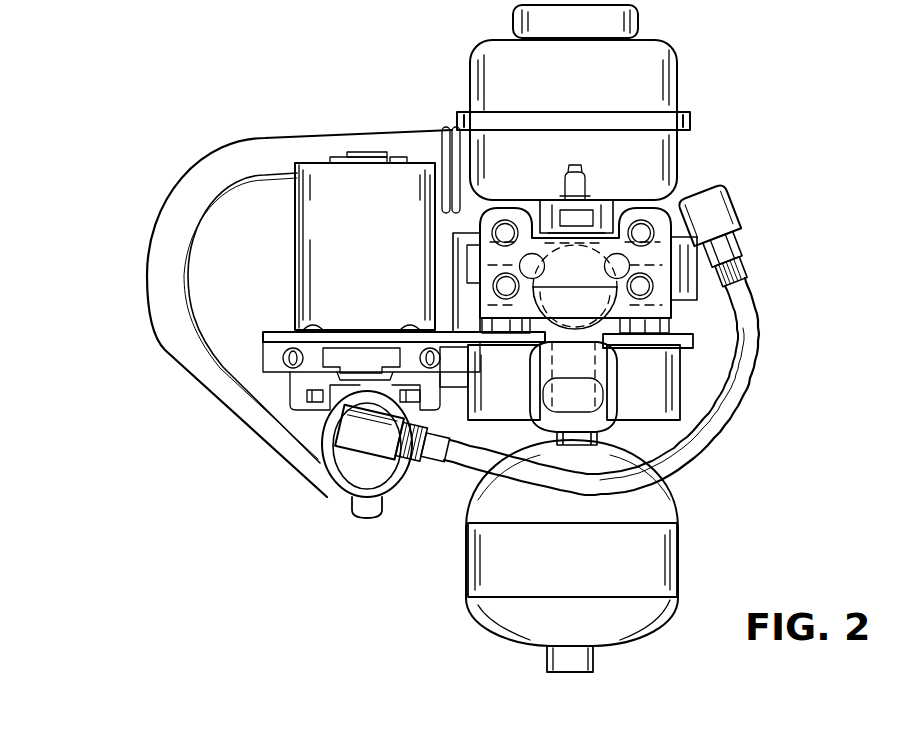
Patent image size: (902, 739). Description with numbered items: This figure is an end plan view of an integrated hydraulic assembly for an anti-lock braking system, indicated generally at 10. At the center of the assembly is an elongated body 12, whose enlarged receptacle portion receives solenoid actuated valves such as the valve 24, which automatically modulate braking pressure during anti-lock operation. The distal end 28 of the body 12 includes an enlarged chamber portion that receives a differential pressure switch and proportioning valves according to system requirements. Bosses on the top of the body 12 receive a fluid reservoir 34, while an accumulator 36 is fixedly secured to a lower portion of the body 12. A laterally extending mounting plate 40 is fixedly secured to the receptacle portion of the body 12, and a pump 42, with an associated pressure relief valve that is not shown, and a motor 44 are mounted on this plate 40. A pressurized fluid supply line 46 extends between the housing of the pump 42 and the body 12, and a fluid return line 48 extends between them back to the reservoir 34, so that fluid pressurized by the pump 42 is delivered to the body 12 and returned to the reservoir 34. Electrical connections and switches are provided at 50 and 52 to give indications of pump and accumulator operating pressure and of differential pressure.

The integrated hydraulic assembly 10 is at (833, 214).
The elongated body 12 is at (683, 322).
The solenoid actuated valve 24 is at (658, 382).
The distal end 28 is at (680, 308).
The fluid reservoir 34 is at (650, 76).
The accumulator 36 is at (672, 526).
The mounting plate 40 is at (267, 337).
The pump 42 is at (337, 480).
The motor 44 is at (313, 230).
The pressurized fluid supply line 46 is at (465, 460).
The fluid return line 48 is at (267, 417).
The electrical connection and switch 50 is at (597, 410).
The electrical connection and switch 52 is at (576, 184).